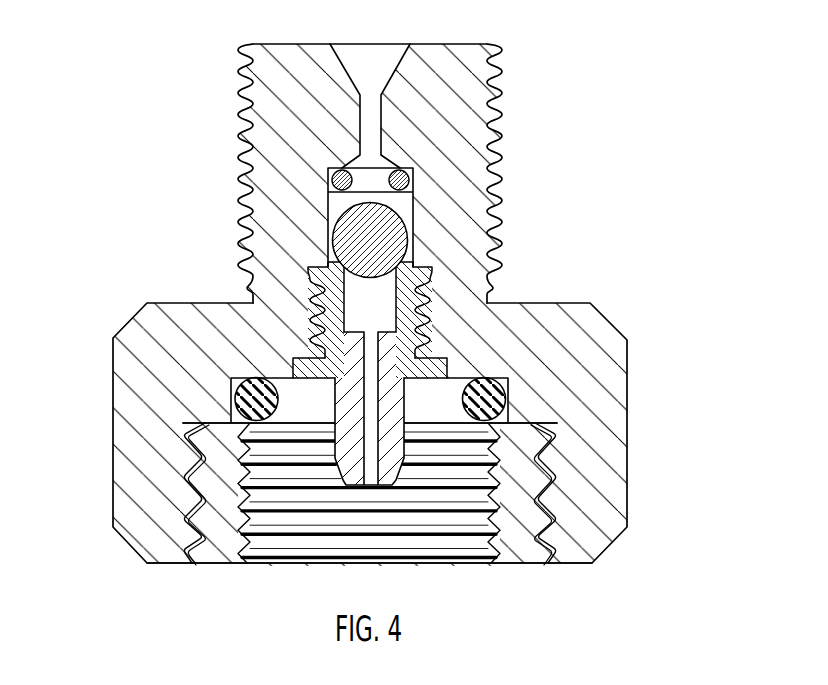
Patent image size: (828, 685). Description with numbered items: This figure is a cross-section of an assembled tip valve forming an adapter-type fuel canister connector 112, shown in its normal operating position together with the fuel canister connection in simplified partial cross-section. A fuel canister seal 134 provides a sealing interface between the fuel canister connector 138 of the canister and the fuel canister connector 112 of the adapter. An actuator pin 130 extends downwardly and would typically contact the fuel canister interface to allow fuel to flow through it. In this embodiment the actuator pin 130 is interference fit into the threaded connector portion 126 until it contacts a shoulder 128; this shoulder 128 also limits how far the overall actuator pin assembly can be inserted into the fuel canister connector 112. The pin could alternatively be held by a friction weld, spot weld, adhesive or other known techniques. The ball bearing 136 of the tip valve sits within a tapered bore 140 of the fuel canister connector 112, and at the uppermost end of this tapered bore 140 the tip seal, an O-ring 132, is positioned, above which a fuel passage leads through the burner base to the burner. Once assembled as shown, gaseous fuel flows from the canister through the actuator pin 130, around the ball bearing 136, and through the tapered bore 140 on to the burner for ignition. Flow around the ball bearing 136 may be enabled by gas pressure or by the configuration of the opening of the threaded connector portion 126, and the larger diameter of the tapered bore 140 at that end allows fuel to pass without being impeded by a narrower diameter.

The fuel canister connector 112 is at (590, 350).
The threaded connector portion 126 is at (407, 300).
The shoulder 128 is at (430, 370).
The actuator pin 130 is at (350, 410).
The O-ring 132 is at (408, 176).
The fuel canister seal 134 is at (490, 405).
The ball bearing 136 is at (400, 236).
The fuel canister connector 138 is at (520, 547).
The tapered bore 140 is at (325, 215).